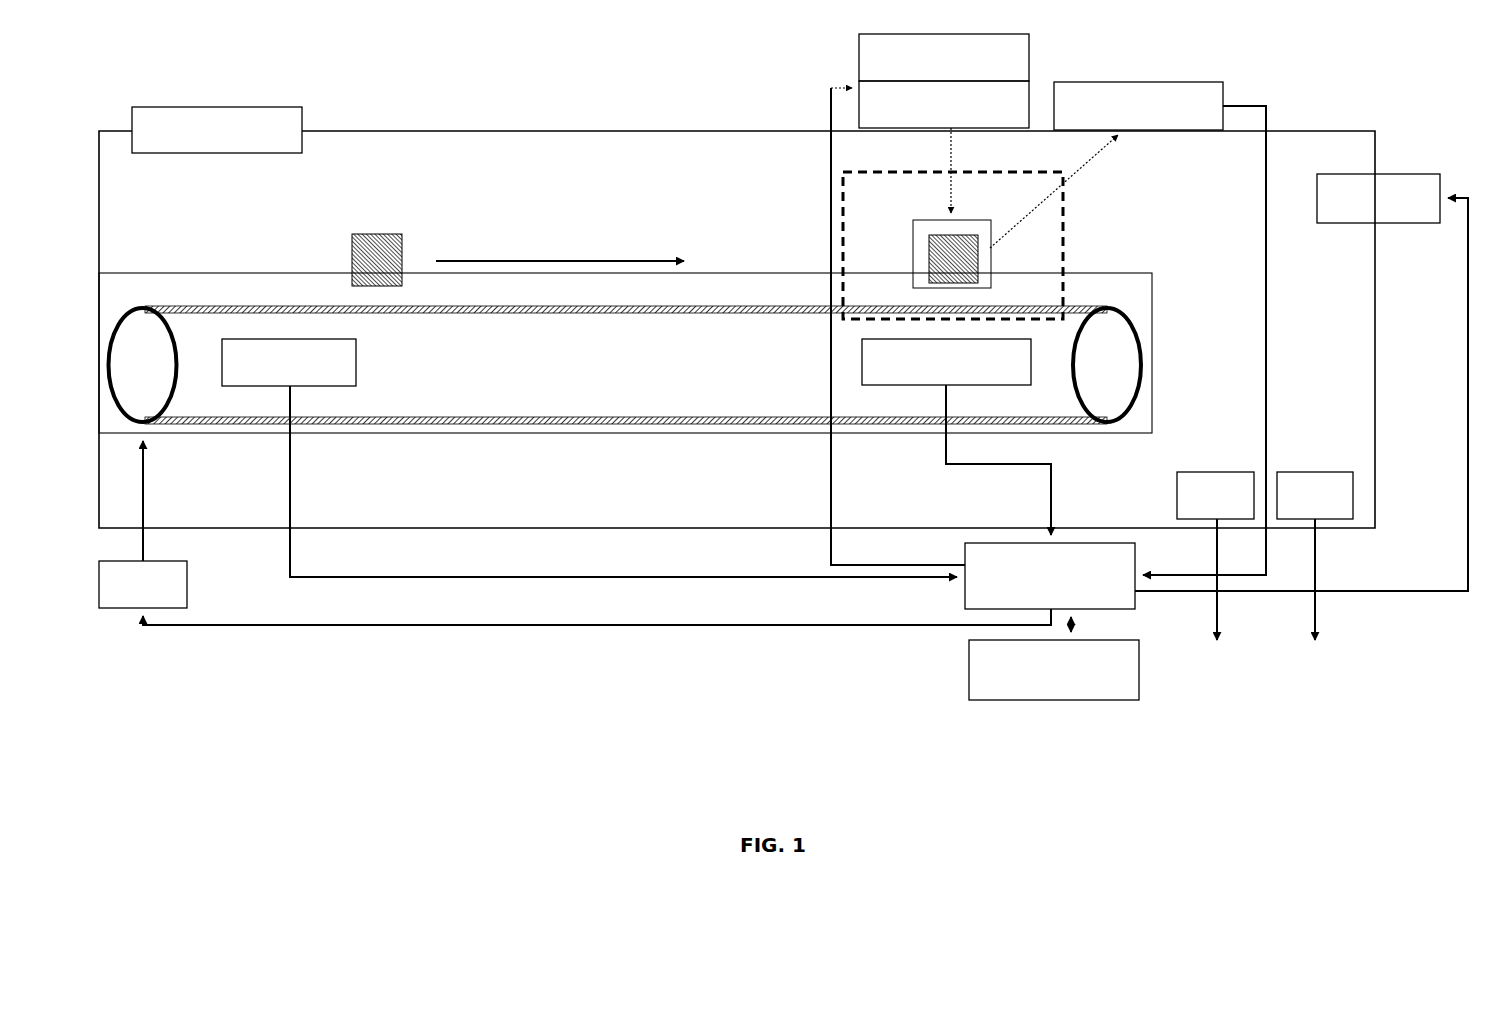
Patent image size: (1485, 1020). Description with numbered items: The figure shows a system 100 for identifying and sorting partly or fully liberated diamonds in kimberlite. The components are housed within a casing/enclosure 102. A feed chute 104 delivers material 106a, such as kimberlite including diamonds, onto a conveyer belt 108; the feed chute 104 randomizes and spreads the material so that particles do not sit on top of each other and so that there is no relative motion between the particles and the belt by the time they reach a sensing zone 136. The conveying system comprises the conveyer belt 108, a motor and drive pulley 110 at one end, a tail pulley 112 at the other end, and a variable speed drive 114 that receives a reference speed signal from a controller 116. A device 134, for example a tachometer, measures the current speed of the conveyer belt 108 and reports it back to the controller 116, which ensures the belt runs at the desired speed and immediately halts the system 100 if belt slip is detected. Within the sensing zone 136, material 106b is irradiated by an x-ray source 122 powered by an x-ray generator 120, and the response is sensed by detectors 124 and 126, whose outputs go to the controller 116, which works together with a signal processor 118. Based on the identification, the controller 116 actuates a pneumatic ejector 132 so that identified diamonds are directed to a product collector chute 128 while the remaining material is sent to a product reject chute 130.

The system 100 is at (1402, 694).
The casing/enclosure 102 is at (362, 128).
The feed chute 104 is at (218, 107).
The material 106a is at (403, 248).
The material 106b is at (913, 255).
The conveyer belt 108 is at (643, 423).
The motor and drive pulley 110 is at (142, 307).
The tail pulley 112 is at (1142, 335).
The variable speed drive 114 is at (187, 583).
The controller 116 is at (965, 543).
The signal processor 118 is at (1139, 660).
The x-ray generator 120 is at (1030, 58).
The x-ray source 122 is at (858, 105).
The detector 124 is at (862, 365).
The detector 126 is at (1224, 82).
The product collector chute 128 is at (1197, 472).
The product reject chute 130 is at (1302, 472).
The pneumatic ejector 132 is at (1407, 174).
The device 134 is at (357, 362).
The sensing zone 136 is at (1063, 243).